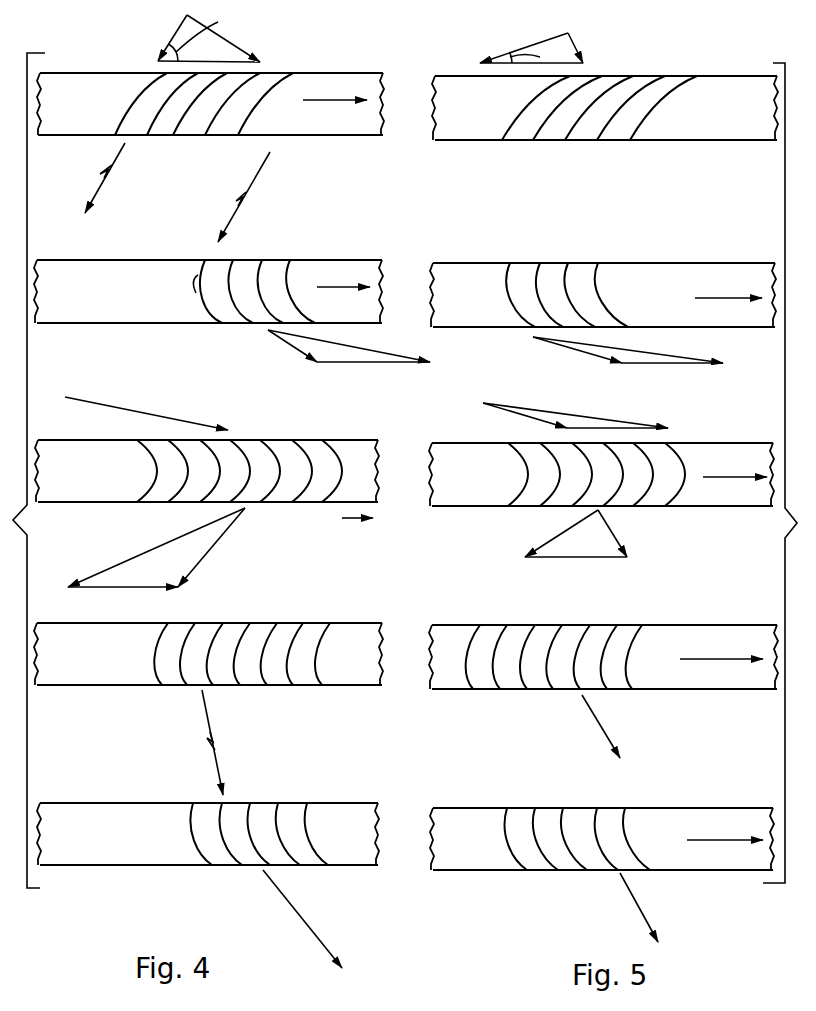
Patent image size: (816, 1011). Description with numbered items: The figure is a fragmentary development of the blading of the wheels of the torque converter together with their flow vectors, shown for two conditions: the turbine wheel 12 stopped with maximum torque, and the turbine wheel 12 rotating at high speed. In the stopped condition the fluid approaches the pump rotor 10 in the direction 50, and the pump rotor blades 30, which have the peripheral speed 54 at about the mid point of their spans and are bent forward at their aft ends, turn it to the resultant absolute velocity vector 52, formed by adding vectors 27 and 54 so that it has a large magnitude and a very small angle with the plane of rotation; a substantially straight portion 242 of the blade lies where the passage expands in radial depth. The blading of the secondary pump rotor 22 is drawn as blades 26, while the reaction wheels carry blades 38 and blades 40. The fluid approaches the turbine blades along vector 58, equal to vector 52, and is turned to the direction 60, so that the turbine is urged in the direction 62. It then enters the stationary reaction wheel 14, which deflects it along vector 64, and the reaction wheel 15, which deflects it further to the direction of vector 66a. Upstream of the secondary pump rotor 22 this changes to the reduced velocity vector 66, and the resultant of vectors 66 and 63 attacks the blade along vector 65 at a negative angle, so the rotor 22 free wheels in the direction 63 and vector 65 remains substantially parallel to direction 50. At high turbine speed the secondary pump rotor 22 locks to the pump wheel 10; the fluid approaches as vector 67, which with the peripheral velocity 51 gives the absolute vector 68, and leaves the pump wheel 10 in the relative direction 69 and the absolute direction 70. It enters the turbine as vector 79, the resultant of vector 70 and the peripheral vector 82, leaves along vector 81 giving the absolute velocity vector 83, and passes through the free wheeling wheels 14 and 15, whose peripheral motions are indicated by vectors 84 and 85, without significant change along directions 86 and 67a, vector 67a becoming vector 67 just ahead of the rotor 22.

In FIG. 4, the pump rotor 10 is at (85, 263).
In FIG. 5, the pump rotor 10 is at (670, 272).
In FIG. 4, the turbine wheel 12 is at (73, 450).
In FIG. 5, the turbine wheel 12 is at (723, 500).
In FIG. 4, the reaction wheel 14 is at (345, 633).
In FIG. 5, the reaction wheel 14 is at (450, 690).
In FIG. 4, the reaction wheel 15 is at (78, 803).
In FIG. 5, the reaction wheel 15 is at (467, 807).
In FIG. 4, the secondary pump rotor 22 is at (358, 78).
In FIG. 5, the secondary pump rotor 22 is at (755, 78).
In FIG. 4, the recorded track segments 26 is at (137, 90).
In FIG. 4, the vector 27 is at (264, 338).
In FIG. 4, the pump rotor blades 30 is at (198, 280).
In FIG. 5, the pump rotor blades 30 is at (530, 277).
In FIG. 4, the track segments 38 is at (160, 645).
In FIG. 5, the track segments 38 is at (470, 648).
In FIG. 4, the track segments 40 is at (193, 842).
In FIG. 4, the direction of fluid approach 50 is at (113, 176).
In FIG. 4, the peripheral velocity 51 is at (216, 60).
In FIG. 5, the peripheral velocity 51 is at (498, 67).
In FIG. 4, the resultant absolute velocity vector 52 is at (337, 345).
In FIG. 4, the peripheral speed 54 is at (343, 275).
In FIG. 5, the peripheral speed 54 is at (733, 297).
In FIG. 4, the vector 58 is at (156, 413).
In FIG. 4, the direction 60 is at (167, 542).
In FIG. 4, the direction 62 is at (120, 588).
In FIG. 4, the direction 63 is at (335, 101).
In FIG. 4, the vector 64 is at (217, 764).
In FIG. 4, the vector 65 is at (172, 33).
In FIG. 4, the vector 66 is at (238, 42).
In FIG. 4, the vector 66a is at (293, 906).
In FIG. 5, the vector 67 is at (577, 47).
In FIG. 5, the vector 67a is at (635, 893).
In FIG. 5, the absolute vector 68 is at (530, 47).
In FIG. 5, the relative direction 69 is at (582, 352).
In FIG. 5, the absolute direction 70 is at (658, 354).
In FIG. 5, the vector 79 is at (538, 420).
In FIG. 5, the vector 81 is at (555, 533).
In FIG. 5, the peripheral vector 82 is at (620, 426).
In FIG. 5, the absolute velocity vector 83 is at (618, 534).
In FIG. 5, the tape velocity vector 84 is at (727, 658).
In FIG. 5, the tape velocity vector 85 is at (732, 839).
In FIG. 5, the direction 86 is at (602, 724).
In FIG. 4, the substantially straight portion 242 is at (196, 294).